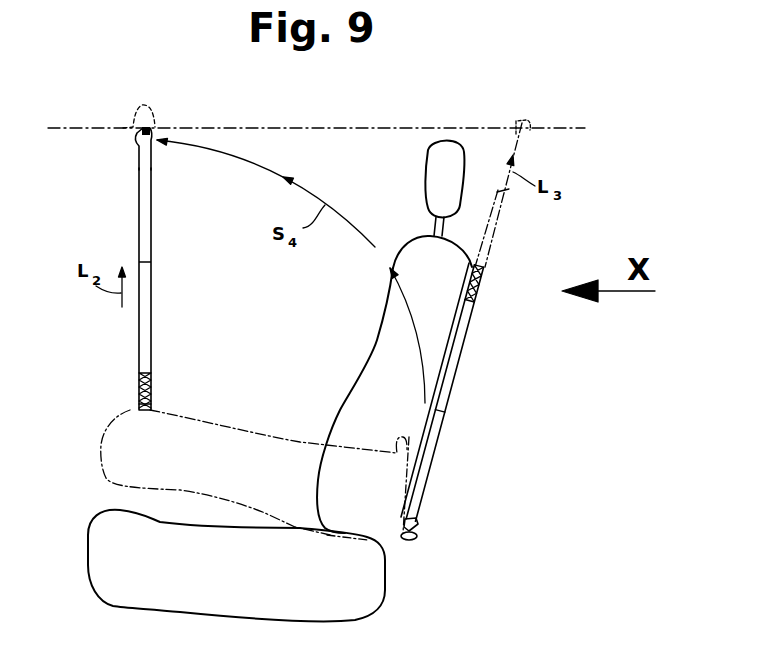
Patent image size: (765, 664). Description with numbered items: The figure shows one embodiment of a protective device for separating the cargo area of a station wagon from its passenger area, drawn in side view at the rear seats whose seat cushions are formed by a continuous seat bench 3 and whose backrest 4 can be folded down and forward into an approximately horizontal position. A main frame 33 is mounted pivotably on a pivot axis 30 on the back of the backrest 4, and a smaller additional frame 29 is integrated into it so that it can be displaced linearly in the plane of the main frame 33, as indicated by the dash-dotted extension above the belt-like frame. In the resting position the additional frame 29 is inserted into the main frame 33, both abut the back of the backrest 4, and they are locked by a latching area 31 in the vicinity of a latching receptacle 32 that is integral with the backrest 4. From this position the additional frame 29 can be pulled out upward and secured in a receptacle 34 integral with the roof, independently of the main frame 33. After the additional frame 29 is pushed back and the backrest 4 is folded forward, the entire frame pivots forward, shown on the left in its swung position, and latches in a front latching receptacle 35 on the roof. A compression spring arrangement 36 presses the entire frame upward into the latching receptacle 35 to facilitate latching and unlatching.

The seat bench 3 is at (292, 600).
The backrest 4 is at (347, 424).
The additional frame 29 is at (492, 240).
The pivot axis 30 is at (137, 404).
The latching area 31 is at (420, 516).
The latching receptacle 32 is at (415, 538).
The main frame 33 is at (151, 271).
The receptacle 34 is at (525, 133).
The front latching receptacle 35 is at (154, 133).
The compression spring arrangement 36 is at (153, 395).